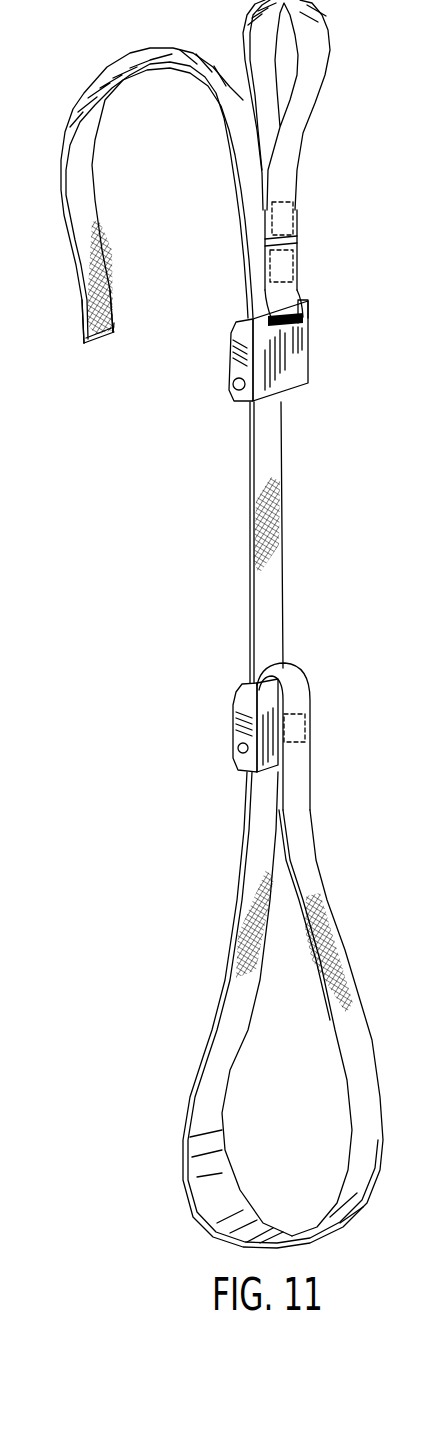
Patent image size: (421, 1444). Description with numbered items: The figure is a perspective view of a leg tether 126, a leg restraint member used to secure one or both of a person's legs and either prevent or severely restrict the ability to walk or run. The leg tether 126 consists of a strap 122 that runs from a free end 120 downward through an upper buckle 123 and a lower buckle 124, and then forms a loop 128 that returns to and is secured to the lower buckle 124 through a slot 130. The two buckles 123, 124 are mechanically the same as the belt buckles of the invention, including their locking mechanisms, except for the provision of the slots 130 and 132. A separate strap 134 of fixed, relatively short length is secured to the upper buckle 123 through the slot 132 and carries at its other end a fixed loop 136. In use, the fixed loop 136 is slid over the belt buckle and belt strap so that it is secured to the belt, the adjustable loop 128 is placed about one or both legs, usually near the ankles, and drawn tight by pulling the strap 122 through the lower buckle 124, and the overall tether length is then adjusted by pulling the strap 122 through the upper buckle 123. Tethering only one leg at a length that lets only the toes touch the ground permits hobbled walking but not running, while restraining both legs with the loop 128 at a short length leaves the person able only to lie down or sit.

The free end 120 is at (83, 344).
The strap 122 is at (160, 50).
The buckle 123 is at (230, 350).
The buckle 124 is at (233, 735).
The leg tether 126 is at (213, 527).
The loop 128 is at (213, 1028).
The slot 130 is at (240, 693).
The slot 132 is at (296, 322).
The strap 134 is at (293, 235).
The loop 136 is at (322, 60).